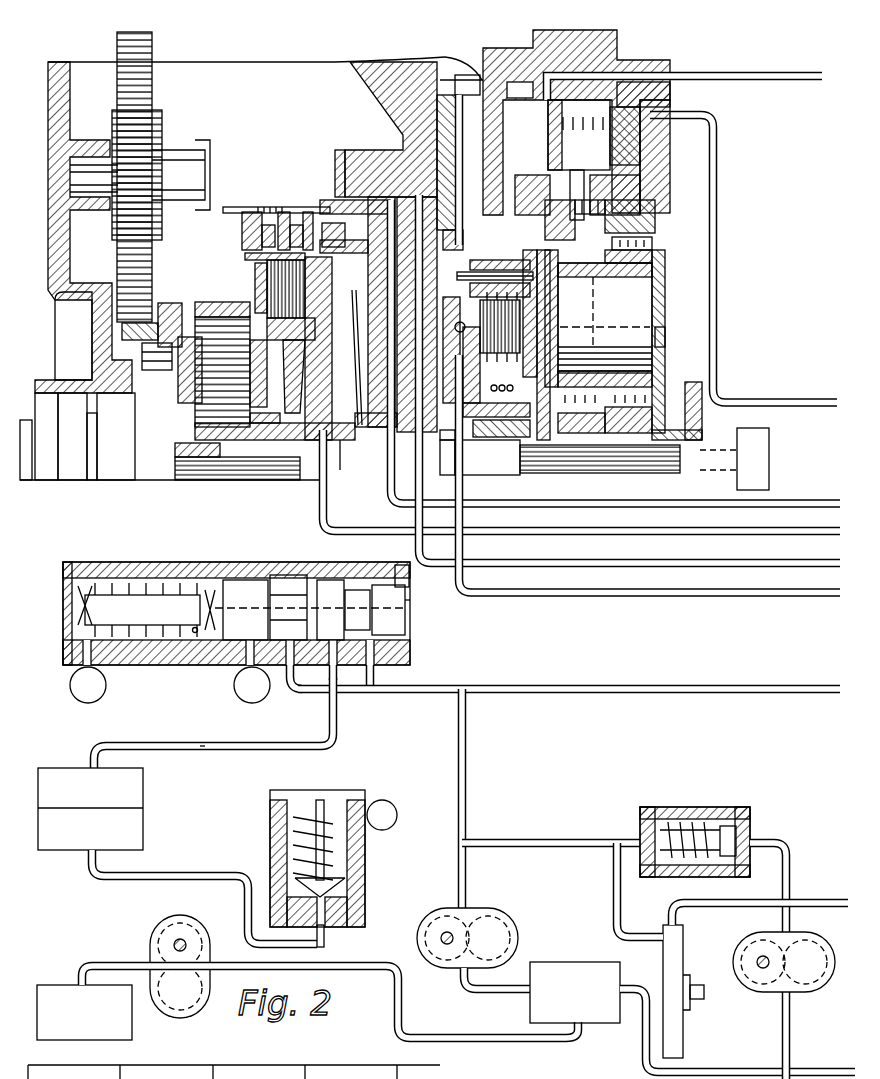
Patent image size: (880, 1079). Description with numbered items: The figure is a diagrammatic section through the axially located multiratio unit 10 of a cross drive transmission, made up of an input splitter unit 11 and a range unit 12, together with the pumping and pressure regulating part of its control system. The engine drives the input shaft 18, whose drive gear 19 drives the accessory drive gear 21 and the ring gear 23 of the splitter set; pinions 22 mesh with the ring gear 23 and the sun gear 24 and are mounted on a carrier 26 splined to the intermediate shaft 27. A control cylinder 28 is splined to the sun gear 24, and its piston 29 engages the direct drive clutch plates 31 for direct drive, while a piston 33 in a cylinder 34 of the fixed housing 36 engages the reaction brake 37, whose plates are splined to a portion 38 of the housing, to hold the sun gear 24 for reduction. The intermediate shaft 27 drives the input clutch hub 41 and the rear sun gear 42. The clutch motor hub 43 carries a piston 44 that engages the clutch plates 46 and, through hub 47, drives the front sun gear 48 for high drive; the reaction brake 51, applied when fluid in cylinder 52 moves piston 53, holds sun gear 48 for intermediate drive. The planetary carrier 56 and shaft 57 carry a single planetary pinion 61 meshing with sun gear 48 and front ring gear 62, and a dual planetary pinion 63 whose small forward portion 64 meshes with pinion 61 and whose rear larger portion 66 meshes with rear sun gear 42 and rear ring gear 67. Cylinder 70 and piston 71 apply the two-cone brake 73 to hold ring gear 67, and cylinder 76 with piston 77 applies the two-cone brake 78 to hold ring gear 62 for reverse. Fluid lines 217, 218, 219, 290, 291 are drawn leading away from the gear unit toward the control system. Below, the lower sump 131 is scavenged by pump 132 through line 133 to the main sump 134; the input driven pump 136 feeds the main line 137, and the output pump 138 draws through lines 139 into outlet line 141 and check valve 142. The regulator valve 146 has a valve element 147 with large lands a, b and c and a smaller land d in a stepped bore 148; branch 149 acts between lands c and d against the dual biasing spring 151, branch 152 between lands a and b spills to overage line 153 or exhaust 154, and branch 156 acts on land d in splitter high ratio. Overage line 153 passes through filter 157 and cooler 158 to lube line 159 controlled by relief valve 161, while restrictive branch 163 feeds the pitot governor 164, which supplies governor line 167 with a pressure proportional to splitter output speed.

The multiratio unit 10 is at (342, 148).
The input splitter unit 11 is at (273, 205).
The range unit 12 is at (635, 58).
The input shaft 18 is at (78, 455).
The drive gear 19 is at (125, 335).
The accessory drive gear 21 is at (150, 262).
The pinions 22 is at (222, 330).
The ring gear 23 is at (188, 302).
The sun gear 24 is at (210, 445).
The carrier 26 is at (165, 380).
The intermediate shaft 27 is at (347, 480).
The control cylinder 28 is at (333, 290).
The piston 29 is at (352, 330).
The direct drive clutch plates 31 is at (255, 282).
The piston 33 is at (325, 222).
The cylinder 34 is at (405, 205).
The fixed housing 36 is at (415, 115).
The reaction brake 37 is at (285, 222).
The portion of fixed housing 38 is at (238, 206).
The input clutch hub 41 is at (518, 445).
The rear sun gear 42 is at (632, 435).
The clutch motor hub 43 is at (480, 316).
The piston 44 is at (454, 341).
The clutch plates 46 is at (522, 322).
The hub 47 is at (553, 345).
The front sun gear 48 is at (590, 474).
The reaction brake 51 is at (445, 160).
The cylinder 52 is at (438, 70).
The piston 53 is at (448, 94).
The planetary carrier 56 is at (666, 297).
The shaft 57 is at (690, 440).
The single planetary pinion 61 is at (600, 231).
The front ring gear 62 is at (500, 276).
The dual planetary pinion 63 is at (666, 330).
The small forward pinion portion 64 is at (598, 270).
The rear larger pinion portion 66 is at (652, 245).
The rear ring gear 67 is at (656, 232).
The cylinder 70 is at (560, 128).
The movable piston 71 is at (548, 118).
The two-cone brake 73 is at (672, 185).
The cylinder 76 is at (643, 94).
The piston 77 is at (642, 130).
The two-cone brake 78 is at (548, 135).
The lower sump 131 is at (56, 984).
The scavenge pump 132 is at (160, 925).
The line 133 is at (400, 1006).
The main sump 134 is at (550, 962).
The input driven pump 136 is at (508, 910).
The main line 137 is at (828, 695).
The output pump 138 is at (808, 993).
The lines 139 is at (722, 1068).
The pump outlet line 141 is at (790, 840).
The check valve 142 is at (728, 807).
The regulator valve 146 is at (118, 562).
The valve element 147 is at (285, 575).
The stepped bore 148 is at (330, 580).
The main line branch 149 is at (380, 674).
The dual biasing spring 151 is at (152, 640).
The main line branch 152 is at (310, 694).
The overage line 153 is at (198, 750).
The exhaust 154 is at (252, 704).
The branch 156 is at (412, 580).
The filter 157 is at (143, 795).
The cooler 158 is at (143, 822).
The lube line 159 is at (168, 874).
The relief valve 161 is at (276, 835).
The restrictive branch 163 is at (612, 910).
The pitot governor 164 is at (770, 440).
The governor line 167 is at (815, 898).
The conduit 217 is at (424, 480).
The conduit 218 is at (665, 626).
The conduit 219 is at (708, 72).
The conduit 290 is at (390, 508).
The conduit 291 is at (320, 508).
The large land a is at (240, 580).
The large land b is at (286, 684).
The large land c is at (359, 677).
The smaller land d is at (410, 626).